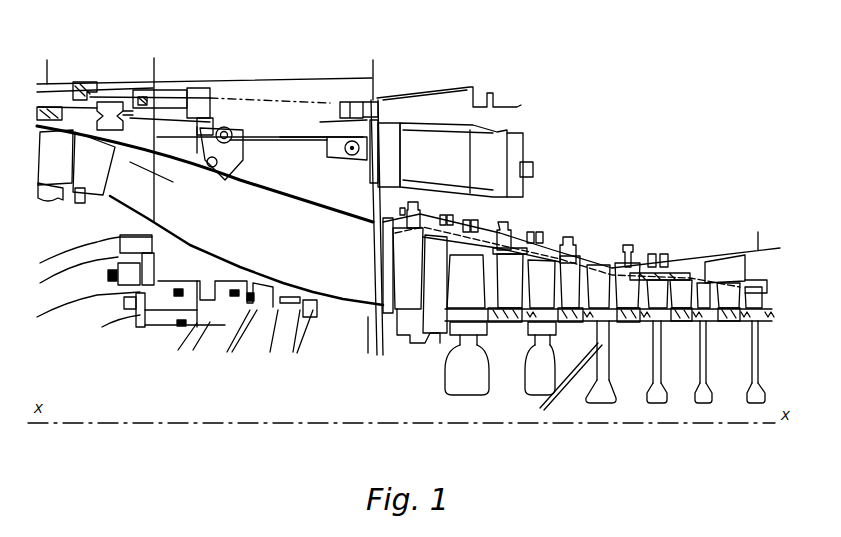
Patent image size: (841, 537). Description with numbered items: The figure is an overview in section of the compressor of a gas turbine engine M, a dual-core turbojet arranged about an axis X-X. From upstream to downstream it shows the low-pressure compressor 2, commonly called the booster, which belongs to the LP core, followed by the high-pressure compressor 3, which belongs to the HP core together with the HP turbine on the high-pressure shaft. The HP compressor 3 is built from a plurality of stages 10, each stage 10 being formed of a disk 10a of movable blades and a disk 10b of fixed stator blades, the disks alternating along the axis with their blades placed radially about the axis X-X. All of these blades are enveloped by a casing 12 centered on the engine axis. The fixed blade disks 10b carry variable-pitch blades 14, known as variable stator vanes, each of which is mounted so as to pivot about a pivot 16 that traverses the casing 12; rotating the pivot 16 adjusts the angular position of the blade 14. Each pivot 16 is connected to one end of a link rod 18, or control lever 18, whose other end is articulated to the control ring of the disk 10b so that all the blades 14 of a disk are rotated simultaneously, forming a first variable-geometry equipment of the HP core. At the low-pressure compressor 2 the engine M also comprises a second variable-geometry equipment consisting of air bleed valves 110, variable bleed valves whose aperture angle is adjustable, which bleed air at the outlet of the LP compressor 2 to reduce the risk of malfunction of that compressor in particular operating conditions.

The gas turbine engine M is at (626, 113).
The low-pressure compressor 2 is at (164, 186).
The air bleed valve 110 is at (238, 169).
The high-pressure compressor 3 is at (388, 284).
The variable-pitch blade 14 is at (593, 285).
The link rod 18 is at (505, 220).
The pivot 16 is at (427, 213).
The casing 12 is at (602, 290).
The stage 10 is at (763, 409).
The disk of movable blades 10a is at (468, 400).
The disk of fixed blades 10b is at (419, 331).